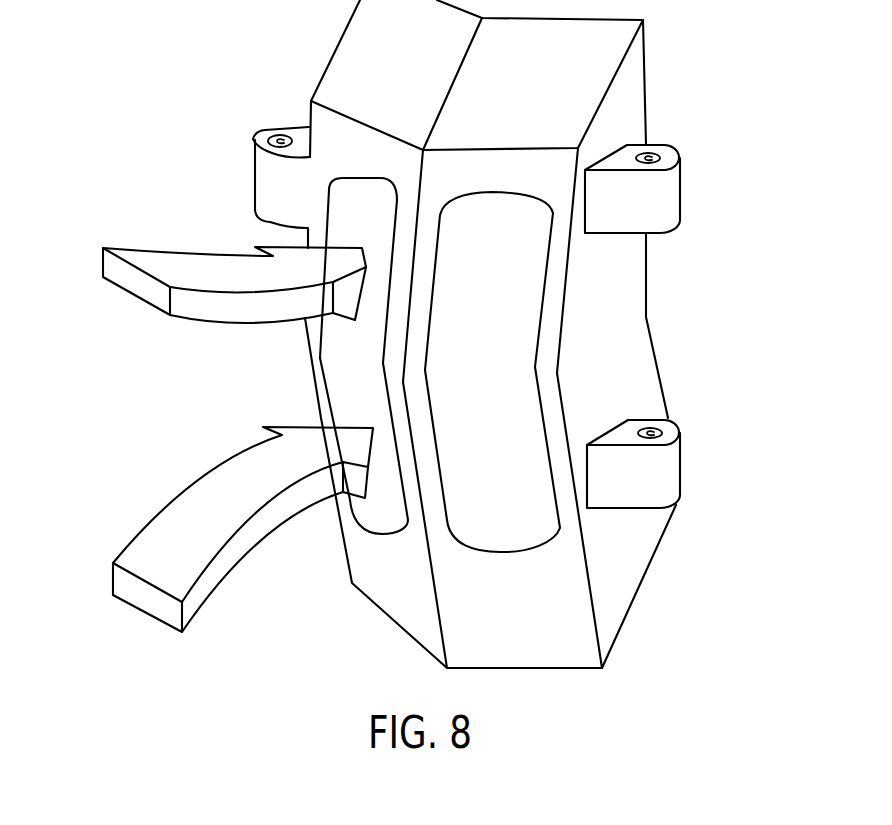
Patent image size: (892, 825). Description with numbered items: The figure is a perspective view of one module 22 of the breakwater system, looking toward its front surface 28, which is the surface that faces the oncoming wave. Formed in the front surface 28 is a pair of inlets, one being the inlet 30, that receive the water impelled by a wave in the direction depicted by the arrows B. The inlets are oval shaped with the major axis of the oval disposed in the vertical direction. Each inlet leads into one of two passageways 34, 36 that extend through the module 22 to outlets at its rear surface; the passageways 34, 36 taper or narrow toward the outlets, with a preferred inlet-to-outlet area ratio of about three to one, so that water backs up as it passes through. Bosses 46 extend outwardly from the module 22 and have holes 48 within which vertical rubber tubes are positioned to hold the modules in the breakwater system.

The module 22 is at (642, 585).
The front surface 28 is at (323, 117).
The inlet 30 is at (322, 345).
The passageway 34 is at (362, 357).
The passageway 36 is at (497, 297).
The boss 46 is at (252, 173).
The hole 48 is at (263, 133).
The arrows B is at (158, 262).